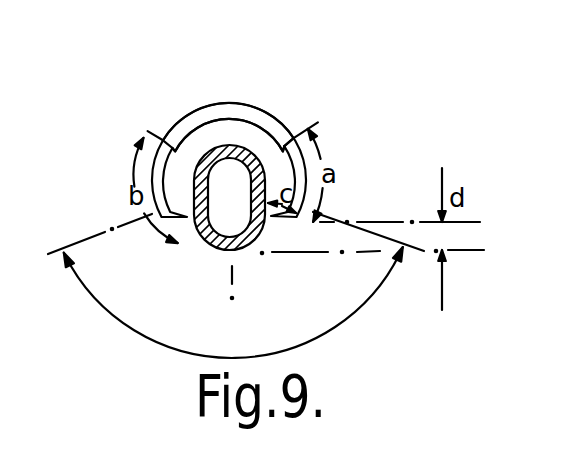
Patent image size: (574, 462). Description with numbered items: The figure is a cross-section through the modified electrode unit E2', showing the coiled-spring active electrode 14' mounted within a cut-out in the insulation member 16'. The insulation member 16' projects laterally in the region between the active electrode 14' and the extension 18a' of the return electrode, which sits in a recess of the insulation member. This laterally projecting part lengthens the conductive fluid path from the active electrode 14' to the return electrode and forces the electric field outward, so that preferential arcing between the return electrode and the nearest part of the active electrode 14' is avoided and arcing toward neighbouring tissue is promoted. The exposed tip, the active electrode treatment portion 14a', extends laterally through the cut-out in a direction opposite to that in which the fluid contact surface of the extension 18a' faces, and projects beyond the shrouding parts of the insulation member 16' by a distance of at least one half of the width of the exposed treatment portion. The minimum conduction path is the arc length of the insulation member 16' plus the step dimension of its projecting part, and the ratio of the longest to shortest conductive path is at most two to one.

The electrode unit E2' is at (253, 128).
The return electrode extension 18a' is at (208, 95).
The insulation member 16' is at (342, 135).
The active electrode 14' is at (164, 256).
The active electrode treatment portion 14a' is at (255, 230).